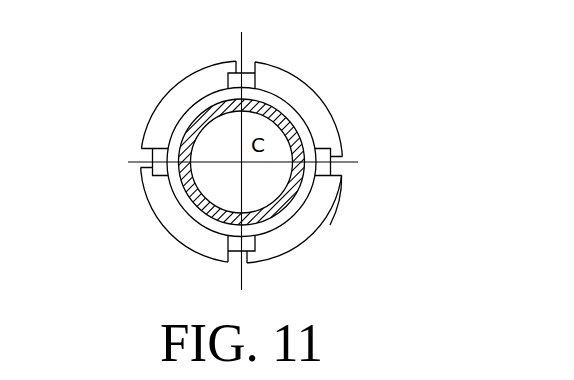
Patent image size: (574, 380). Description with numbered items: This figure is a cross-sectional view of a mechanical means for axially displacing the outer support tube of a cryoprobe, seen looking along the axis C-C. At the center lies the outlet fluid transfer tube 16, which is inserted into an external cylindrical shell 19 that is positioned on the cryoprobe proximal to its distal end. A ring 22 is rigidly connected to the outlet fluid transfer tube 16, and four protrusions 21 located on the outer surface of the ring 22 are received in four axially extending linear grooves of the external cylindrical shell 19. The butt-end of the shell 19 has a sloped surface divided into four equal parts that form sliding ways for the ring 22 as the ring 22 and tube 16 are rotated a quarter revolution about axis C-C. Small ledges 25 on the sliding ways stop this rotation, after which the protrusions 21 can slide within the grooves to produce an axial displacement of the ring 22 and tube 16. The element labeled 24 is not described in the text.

The outlet fluid transfer tube 16 is at (280, 213).
The external cylindrical shell 19 is at (178, 223).
The protrusions 21 is at (235, 80).
The ring 22 is at (288, 112).
The annular ring 24 is at (325, 130).
The ledges 25 is at (340, 195).